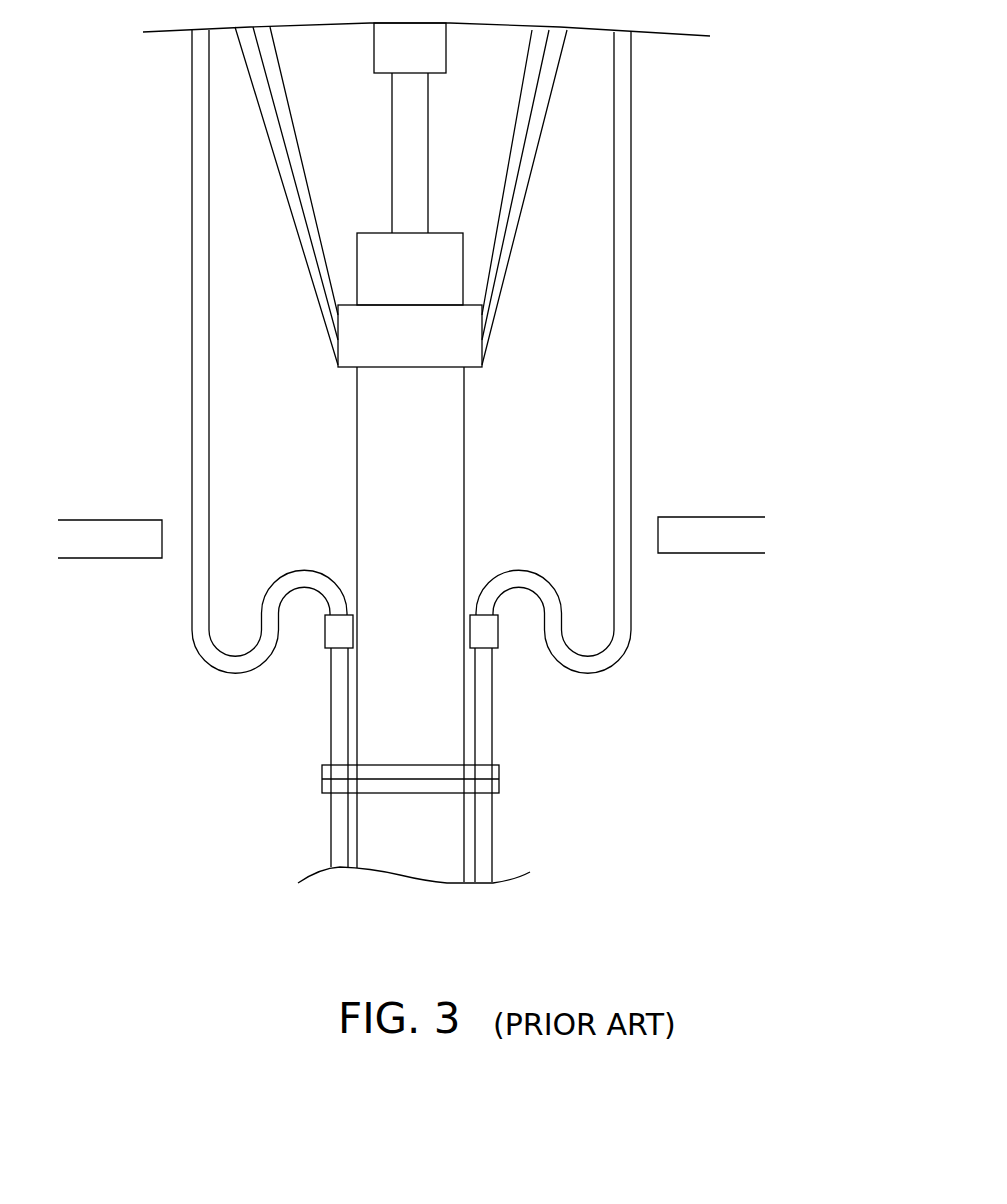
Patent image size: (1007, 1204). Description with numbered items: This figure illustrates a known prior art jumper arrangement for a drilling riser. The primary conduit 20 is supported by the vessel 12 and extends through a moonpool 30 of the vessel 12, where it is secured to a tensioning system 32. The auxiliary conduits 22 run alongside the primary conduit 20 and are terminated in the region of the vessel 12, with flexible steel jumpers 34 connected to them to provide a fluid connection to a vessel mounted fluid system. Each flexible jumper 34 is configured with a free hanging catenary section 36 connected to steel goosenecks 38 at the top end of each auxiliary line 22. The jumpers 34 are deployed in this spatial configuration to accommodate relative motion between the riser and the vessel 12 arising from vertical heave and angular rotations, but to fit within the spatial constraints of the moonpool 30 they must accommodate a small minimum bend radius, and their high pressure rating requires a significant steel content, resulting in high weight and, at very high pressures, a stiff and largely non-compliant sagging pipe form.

The vessel 12 is at (752, 530).
The primary conduit 20 is at (380, 410).
The auxiliary conduits 22 is at (342, 733).
The moonpool 30 is at (645, 532).
The tensioning system 32 is at (480, 330).
The flexible steel jumpers 34 is at (203, 437).
The free hanging catenary section 36 is at (235, 670).
The steel goosenecks 38 is at (307, 582).